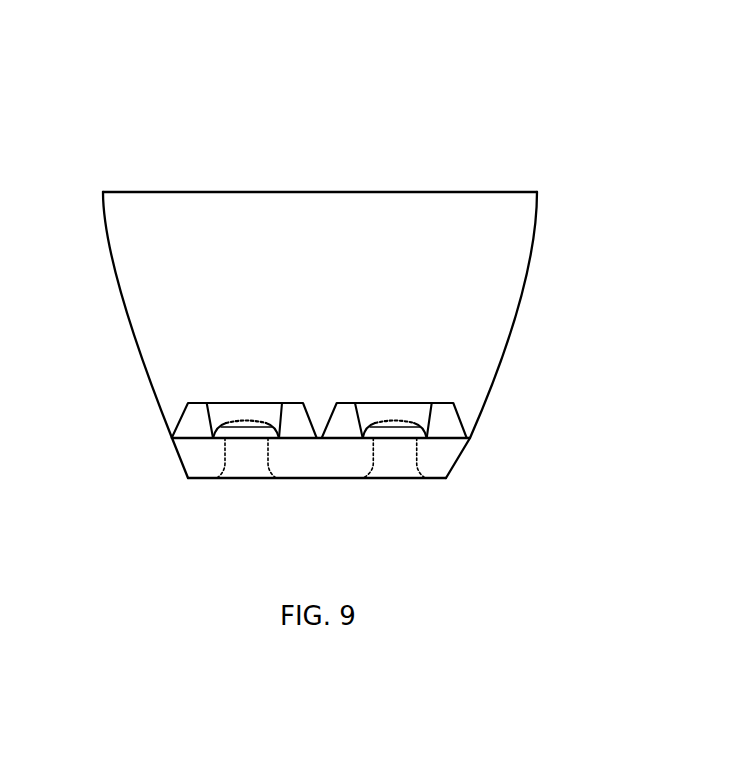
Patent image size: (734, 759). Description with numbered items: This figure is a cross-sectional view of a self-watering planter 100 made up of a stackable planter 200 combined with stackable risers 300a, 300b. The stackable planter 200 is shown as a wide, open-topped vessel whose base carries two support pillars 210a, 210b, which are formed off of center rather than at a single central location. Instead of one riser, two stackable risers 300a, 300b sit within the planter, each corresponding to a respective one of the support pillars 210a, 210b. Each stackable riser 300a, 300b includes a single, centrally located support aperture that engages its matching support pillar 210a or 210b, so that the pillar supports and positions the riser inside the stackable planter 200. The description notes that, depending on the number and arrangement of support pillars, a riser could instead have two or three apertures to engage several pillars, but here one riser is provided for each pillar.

The self-watering planter 100 is at (243, 117).
The stackable planter 200 is at (561, 212).
The stackable riser 300a is at (460, 402).
The stackable riser 300b is at (171, 406).
The support pillar 210a is at (392, 476).
The support pillar 210b is at (245, 476).